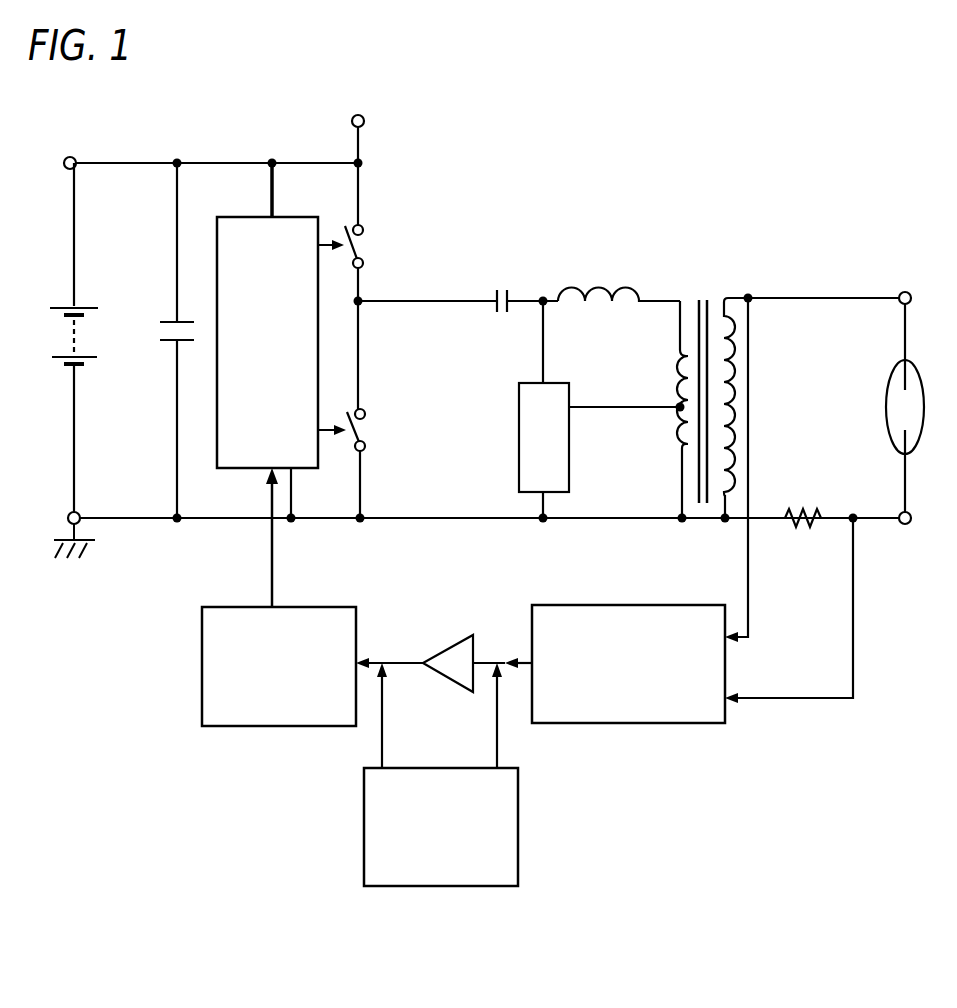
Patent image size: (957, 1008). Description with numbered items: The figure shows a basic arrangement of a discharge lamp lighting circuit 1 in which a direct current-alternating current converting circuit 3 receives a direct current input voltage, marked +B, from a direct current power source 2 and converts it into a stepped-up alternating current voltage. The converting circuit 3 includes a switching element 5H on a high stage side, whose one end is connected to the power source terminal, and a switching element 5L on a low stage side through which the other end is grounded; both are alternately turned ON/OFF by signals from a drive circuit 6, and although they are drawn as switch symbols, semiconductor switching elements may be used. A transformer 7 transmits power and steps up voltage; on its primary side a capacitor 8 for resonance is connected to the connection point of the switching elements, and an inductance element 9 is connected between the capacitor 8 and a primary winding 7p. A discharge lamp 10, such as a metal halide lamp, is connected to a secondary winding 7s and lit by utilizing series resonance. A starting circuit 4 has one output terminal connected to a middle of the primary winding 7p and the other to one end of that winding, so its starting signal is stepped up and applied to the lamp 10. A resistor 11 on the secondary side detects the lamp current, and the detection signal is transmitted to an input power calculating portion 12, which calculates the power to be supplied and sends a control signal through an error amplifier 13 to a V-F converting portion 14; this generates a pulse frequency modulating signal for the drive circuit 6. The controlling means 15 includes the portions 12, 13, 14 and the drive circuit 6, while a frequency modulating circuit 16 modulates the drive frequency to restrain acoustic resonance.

The discharge lamp lighting circuit 1 is at (866, 186).
The direct current power source 2 is at (68, 308).
The direct current-alternating current converting circuit 3 is at (391, 316).
The starting circuit 4 is at (519, 456).
The switching element on a high stage side 5H is at (343, 233).
The switching element on a low stage side 5L is at (351, 449).
The drive circuit 6 is at (217, 268).
The transformer 7 is at (717, 353).
The primary winding 7p is at (685, 352).
The secondary winding 7s is at (723, 318).
The capacitor for resonance 8 is at (495, 295).
The inductance element 9 is at (580, 311).
The discharge lamp 10 is at (918, 379).
The resistor for detecting the current 11 is at (792, 526).
The input power calculating portion 12 is at (618, 724).
The error amplifier 13 is at (443, 682).
The V-F converting portion 14 is at (202, 667).
The controlling means 15 is at (496, 592).
The frequency modulating circuit 16 is at (364, 827).